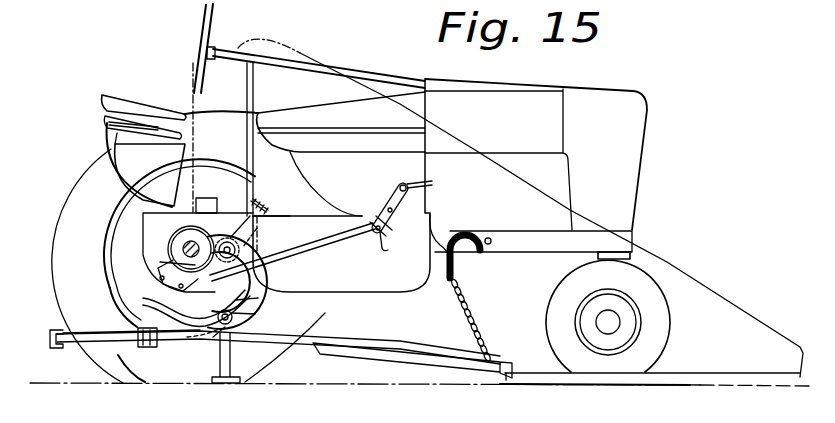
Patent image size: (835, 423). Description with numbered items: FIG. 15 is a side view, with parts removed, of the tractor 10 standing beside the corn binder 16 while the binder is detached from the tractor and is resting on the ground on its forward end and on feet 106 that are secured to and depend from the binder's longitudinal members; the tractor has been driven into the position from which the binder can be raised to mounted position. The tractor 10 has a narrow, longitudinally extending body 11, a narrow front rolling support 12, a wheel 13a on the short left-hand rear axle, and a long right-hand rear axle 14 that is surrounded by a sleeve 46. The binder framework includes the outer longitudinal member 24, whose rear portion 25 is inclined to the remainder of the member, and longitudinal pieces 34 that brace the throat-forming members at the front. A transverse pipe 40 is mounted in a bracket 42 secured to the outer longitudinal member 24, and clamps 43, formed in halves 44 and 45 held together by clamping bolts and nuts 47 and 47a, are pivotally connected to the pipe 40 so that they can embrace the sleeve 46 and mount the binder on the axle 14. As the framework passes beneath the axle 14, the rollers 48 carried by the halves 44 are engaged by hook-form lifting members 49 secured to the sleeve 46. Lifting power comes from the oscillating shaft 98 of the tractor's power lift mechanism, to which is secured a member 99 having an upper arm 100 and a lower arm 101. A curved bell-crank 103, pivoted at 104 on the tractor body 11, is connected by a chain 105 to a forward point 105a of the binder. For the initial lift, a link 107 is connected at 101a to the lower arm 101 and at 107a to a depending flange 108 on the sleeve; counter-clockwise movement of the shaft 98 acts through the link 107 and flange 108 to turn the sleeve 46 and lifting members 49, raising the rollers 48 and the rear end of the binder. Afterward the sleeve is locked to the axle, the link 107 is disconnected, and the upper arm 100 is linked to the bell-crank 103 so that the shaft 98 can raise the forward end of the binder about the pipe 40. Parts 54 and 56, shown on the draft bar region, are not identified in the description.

The tractor 10 is at (550, 82).
The tractor body 11 is at (507, 100).
The front rolling support 12 is at (657, 298).
The wheel 13a is at (80, 173).
The right-hand rear axle 14 is at (183, 246).
The corn binder 16 is at (365, 368).
The outer longitudinal member 24 is at (278, 336).
The rear portion 25 is at (102, 344).
The longitudinal pieces 34 is at (723, 372).
The transverse pipe 40 is at (259, 314).
The bracket 42 is at (222, 337).
The clamps 43 is at (270, 279).
The clamp half 44 is at (263, 299).
The clamp half 45 is at (163, 310).
The sleeve 46 is at (205, 236).
The clamping bolts 47 is at (273, 217).
The nuts 47a is at (300, 202).
The rollers 48 is at (250, 229).
The lifting members 49 is at (245, 248).
The end stop 54 is at (56, 350).
The clamp 56 is at (147, 348).
The oscillating shaft 98 is at (390, 205).
The member 99 is at (397, 189).
The upper arm 100 is at (410, 193).
The lower arm 101 is at (392, 228).
The connection point 101a is at (408, 259).
The bell-crank 103 is at (472, 232).
The pivot 104 is at (447, 240).
The chain 105 is at (472, 315).
The forward point 105a is at (514, 379).
The feet 106 is at (220, 369).
The link 107 is at (320, 248).
The connection point 107a is at (157, 260).
The depending flange 108 is at (160, 273).